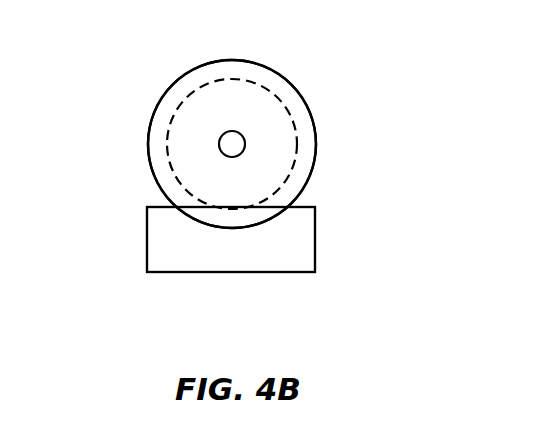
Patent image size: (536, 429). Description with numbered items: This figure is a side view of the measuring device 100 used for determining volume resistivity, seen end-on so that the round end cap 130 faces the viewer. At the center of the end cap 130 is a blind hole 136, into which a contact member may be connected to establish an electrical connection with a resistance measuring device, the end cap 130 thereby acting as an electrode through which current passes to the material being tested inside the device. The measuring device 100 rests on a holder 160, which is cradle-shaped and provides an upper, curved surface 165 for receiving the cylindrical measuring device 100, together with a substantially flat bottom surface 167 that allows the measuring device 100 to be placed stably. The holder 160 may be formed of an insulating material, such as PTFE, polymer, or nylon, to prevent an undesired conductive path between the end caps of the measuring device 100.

The measuring device 100 is at (310, 72).
The end cap 130 is at (160, 93).
The blind hole 136 is at (218, 150).
The upper, curved surface 165 is at (270, 213).
The holder 160 is at (318, 207).
The bottom surface 167 is at (243, 272).